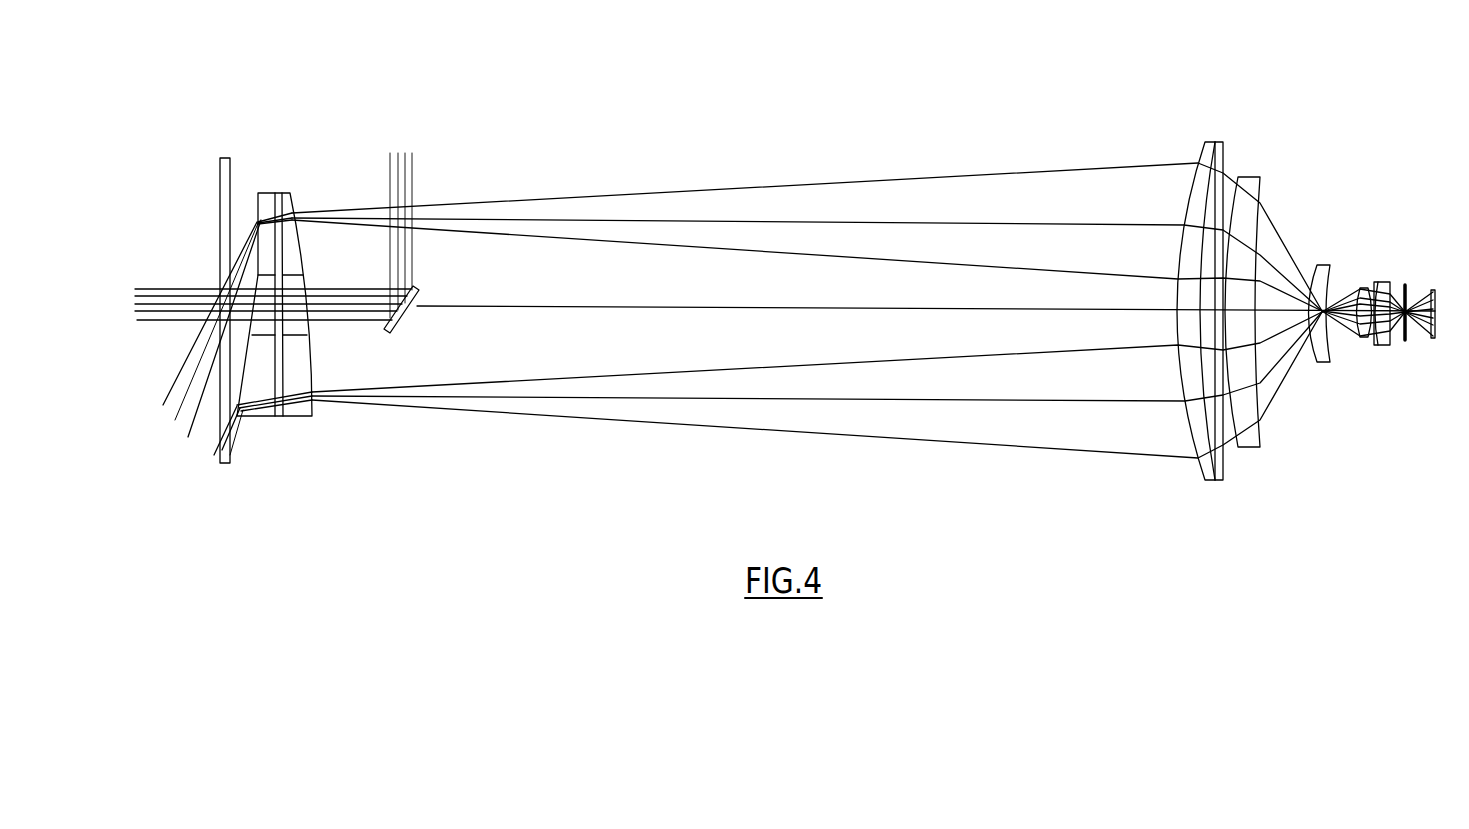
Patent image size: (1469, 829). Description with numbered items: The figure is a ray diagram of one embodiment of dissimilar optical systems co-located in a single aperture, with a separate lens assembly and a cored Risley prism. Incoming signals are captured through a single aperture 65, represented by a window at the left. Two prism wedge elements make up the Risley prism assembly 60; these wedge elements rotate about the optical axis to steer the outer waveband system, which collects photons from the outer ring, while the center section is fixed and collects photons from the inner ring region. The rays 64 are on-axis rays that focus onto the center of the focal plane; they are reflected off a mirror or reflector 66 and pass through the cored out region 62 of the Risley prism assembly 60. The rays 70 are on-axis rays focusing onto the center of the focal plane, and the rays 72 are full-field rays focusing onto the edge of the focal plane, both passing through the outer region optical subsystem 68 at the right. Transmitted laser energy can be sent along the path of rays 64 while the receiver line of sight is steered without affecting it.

The Risley prism assembly 60 is at (281, 189).
The cored out region 62 is at (288, 305).
The rays 64 is at (397, 174).
The single aperture 65 is at (226, 252).
The mirror or reflector 66 is at (416, 302).
The outer region optical subsystem 68 is at (1230, 172).
The rays 70 is at (1078, 226).
The rays 72 is at (746, 238).